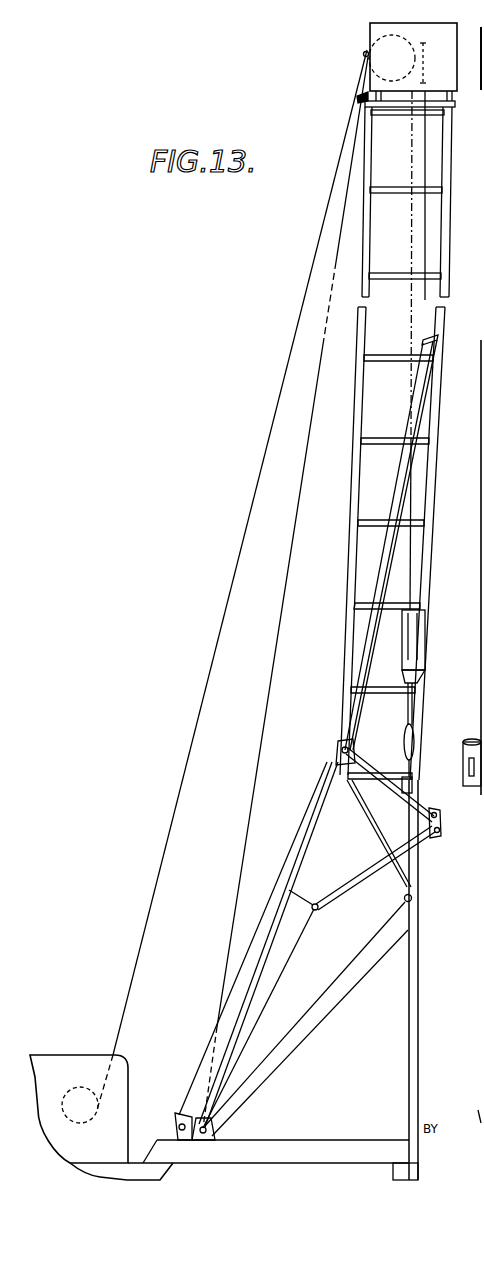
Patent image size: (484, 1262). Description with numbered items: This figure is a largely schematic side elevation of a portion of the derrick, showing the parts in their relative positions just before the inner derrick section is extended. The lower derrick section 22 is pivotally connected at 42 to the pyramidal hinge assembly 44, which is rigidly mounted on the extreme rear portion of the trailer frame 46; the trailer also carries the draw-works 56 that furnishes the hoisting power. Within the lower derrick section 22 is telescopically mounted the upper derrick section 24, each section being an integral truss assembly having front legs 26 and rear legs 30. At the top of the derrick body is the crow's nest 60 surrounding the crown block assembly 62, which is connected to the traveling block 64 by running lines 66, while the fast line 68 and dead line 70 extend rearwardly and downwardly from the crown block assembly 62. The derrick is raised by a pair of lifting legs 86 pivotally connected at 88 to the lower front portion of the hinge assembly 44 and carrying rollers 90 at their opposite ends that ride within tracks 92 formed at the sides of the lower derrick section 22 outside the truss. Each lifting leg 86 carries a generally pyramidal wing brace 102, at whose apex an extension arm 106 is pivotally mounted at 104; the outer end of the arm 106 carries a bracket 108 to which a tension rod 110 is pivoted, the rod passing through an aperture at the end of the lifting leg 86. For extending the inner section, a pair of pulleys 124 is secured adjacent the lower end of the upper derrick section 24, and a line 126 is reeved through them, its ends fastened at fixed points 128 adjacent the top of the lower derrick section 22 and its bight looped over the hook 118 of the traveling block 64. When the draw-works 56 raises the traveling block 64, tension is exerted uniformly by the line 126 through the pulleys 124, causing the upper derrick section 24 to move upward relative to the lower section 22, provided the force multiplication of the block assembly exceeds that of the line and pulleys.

The lower derrick section 22 is at (341, 498).
The upper derrick section 24 is at (357, 99).
The front legs 26 is at (388, 543).
The rear legs 30 is at (347, 565).
The pivotal connection 42 is at (400, 900).
The pyramidal structure 44 is at (408, 997).
The trailer frame 46 is at (280, 1140).
The draw-works 56 is at (65, 1070).
The crow's nest 60 is at (370, 32).
The crown block assembly 62 is at (365, 53).
The traveling block 64 is at (413, 637).
The running lines 66 is at (420, 324).
The fast line 68 is at (208, 672).
The dead line 70 is at (266, 706).
The lifting legs 86 is at (453, 737).
The pivotal connection of lifting legs 88 is at (177, 1120).
The rollers 90 is at (337, 757).
The tracks 92 is at (396, 490).
The wing brace 102 is at (290, 942).
The pivotal mounting of extension arm 104 is at (306, 905).
The extension arm 106 is at (362, 877).
The bracket 108 is at (440, 827).
The tension rod 110 is at (378, 772).
The hook 118 is at (407, 715).
The pulleys 124 is at (398, 802).
The line 126 is at (435, 238).
The fixed points 128 is at (443, 117).